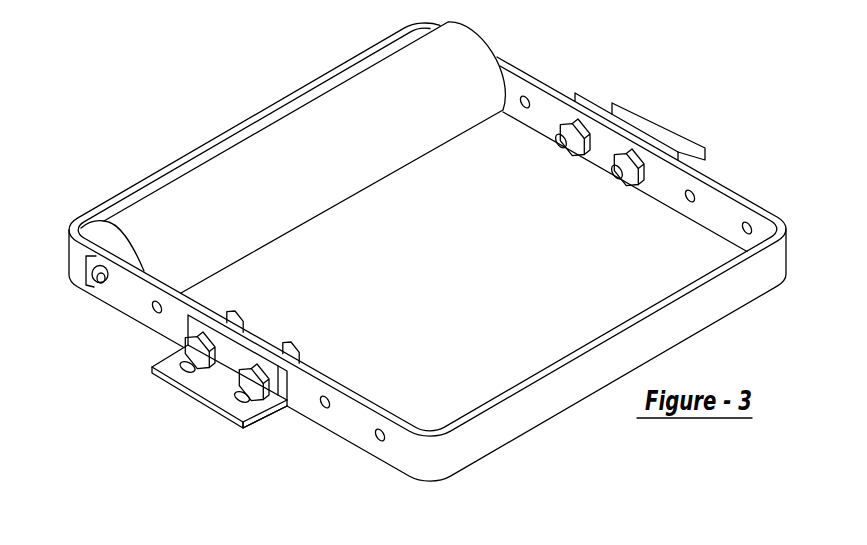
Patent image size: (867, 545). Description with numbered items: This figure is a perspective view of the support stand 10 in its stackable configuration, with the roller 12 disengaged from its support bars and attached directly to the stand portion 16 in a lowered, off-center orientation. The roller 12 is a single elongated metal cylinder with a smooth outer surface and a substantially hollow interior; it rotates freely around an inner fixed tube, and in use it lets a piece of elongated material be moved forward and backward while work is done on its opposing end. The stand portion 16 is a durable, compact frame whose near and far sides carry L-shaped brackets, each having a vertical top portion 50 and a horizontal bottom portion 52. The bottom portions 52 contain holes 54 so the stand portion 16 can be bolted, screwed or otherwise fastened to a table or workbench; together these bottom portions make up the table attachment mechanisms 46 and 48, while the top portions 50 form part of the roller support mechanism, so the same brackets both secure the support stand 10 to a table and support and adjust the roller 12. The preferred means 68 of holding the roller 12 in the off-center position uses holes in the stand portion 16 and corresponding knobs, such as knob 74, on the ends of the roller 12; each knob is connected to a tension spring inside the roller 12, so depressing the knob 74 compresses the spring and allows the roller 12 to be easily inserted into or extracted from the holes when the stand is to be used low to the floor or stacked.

The support stand 10 is at (138, 128).
The roller 12 is at (329, 166).
The stand portion 16 is at (729, 176).
The table attachment mechanism 46 is at (190, 396).
The table attachment mechanism 48 is at (663, 130).
The vertical top portion 50 is at (289, 381).
The horizontal bottom portion 52 is at (250, 425).
The holes 54 is at (178, 365).
The means of attaching roller 68 is at (88, 268).
The knob 74 is at (98, 279).